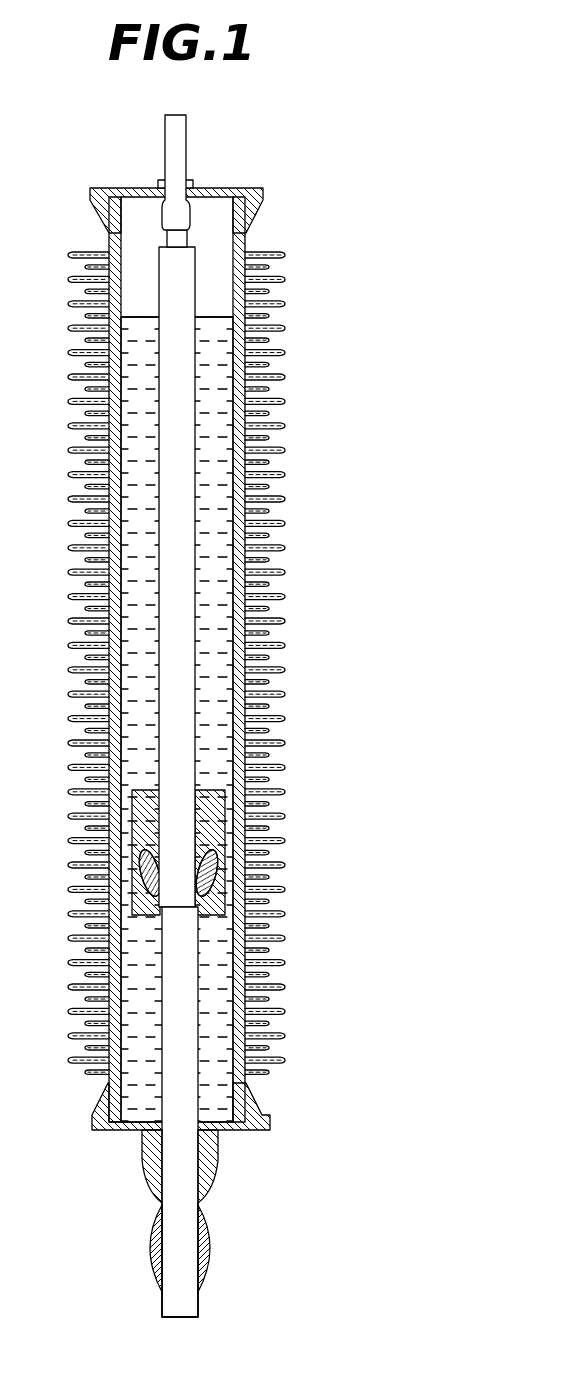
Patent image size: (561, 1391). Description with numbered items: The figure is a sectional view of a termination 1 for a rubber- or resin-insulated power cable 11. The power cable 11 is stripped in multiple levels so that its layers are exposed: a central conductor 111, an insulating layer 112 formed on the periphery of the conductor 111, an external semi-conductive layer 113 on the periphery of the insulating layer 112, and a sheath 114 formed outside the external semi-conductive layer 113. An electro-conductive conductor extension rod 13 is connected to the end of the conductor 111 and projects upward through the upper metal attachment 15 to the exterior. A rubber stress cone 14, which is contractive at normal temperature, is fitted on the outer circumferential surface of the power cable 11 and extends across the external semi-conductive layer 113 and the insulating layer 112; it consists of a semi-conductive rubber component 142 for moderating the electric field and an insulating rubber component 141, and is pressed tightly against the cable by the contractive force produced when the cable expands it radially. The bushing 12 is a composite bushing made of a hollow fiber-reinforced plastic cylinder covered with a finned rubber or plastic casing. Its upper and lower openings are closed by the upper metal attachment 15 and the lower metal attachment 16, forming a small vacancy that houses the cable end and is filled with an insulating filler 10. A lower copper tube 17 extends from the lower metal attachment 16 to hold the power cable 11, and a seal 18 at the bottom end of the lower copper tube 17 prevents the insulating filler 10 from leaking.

The termination 1 is at (365, 240).
The insulating filler 10 is at (232, 690).
The power cable 11 is at (200, 1298).
The conductor 111 is at (178, 240).
The insulating layer 112 is at (178, 505).
The external semi-conductive layer 113 is at (190, 1025).
The sheath 114 is at (188, 1218).
The bushing 12 is at (245, 372).
The conductor extension rod 13 is at (185, 135).
The rubber stress cone 14 is at (368, 783).
The insulating rubber component 141 is at (232, 810).
The semi-conductive rubber component 142 is at (230, 877).
The upper metal attachment 15 is at (263, 191).
The lower metal attachment 16 is at (270, 1122).
The lower copper tube 17 is at (215, 1168).
The seal 18 is at (212, 1258).